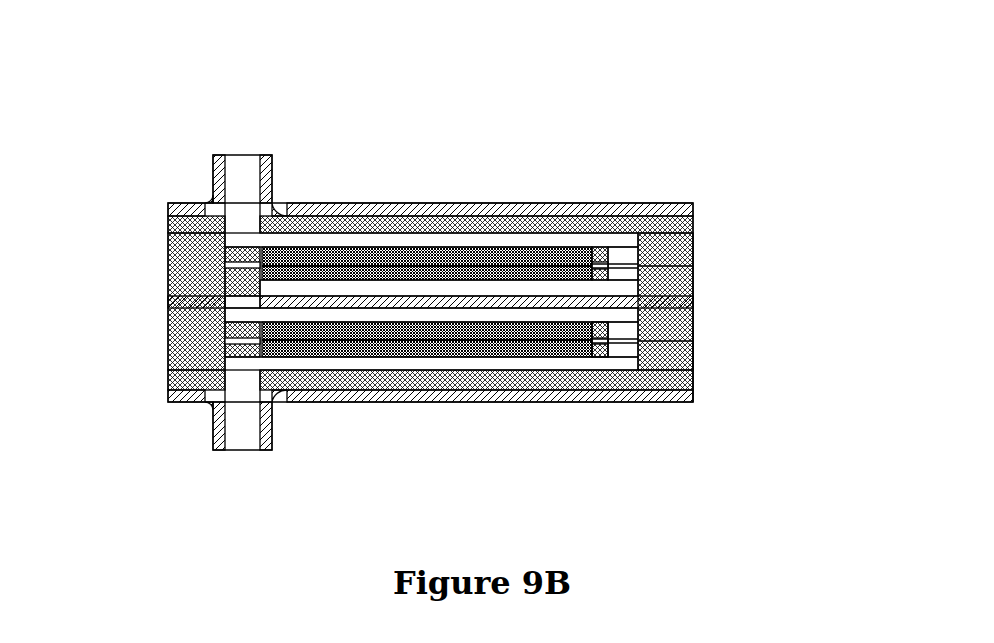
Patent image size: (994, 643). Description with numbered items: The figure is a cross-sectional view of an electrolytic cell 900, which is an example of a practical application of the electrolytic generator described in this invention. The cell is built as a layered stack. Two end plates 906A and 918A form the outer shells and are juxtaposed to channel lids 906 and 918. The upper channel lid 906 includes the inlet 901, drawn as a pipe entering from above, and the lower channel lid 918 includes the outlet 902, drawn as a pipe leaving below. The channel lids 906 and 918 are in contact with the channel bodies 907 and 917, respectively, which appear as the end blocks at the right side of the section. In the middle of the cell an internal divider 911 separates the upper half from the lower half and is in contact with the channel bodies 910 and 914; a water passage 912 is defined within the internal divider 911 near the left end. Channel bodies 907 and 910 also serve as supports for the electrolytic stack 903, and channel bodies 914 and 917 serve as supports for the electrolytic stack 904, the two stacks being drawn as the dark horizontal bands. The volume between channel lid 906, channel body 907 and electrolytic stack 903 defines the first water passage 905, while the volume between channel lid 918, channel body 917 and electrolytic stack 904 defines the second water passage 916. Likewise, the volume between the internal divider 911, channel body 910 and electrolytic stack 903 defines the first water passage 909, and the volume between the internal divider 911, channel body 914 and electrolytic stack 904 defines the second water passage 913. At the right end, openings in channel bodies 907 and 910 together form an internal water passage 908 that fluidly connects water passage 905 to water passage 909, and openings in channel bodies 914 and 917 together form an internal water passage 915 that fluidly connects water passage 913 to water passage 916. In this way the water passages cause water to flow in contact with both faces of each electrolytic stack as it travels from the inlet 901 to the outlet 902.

The electrolytic cell 900 is at (644, 109).
The inlet 901 is at (243, 153).
The outlet 902 is at (242, 450).
The electrolytic stack 903 is at (523, 238).
The electrolytic stack 904 is at (440, 369).
The first water passage 905 is at (257, 241).
The channel lid 906 is at (367, 228).
The end plate 906A is at (400, 203).
The channel body 907 is at (690, 248).
The internal water passage 908 is at (617, 238).
The first water passage 909 is at (605, 291).
The channel body 910 is at (694, 285).
The internal divider 911 is at (225, 302).
The water passage 912 is at (236, 286).
The second water passage 913 is at (260, 317).
The channel body 914 is at (694, 327).
The internal water passage 915 is at (623, 364).
The second water passage 916 is at (491, 370).
The channel body 917 is at (694, 360).
The channel lid 918 is at (362, 372).
The end plate 918A is at (393, 402).